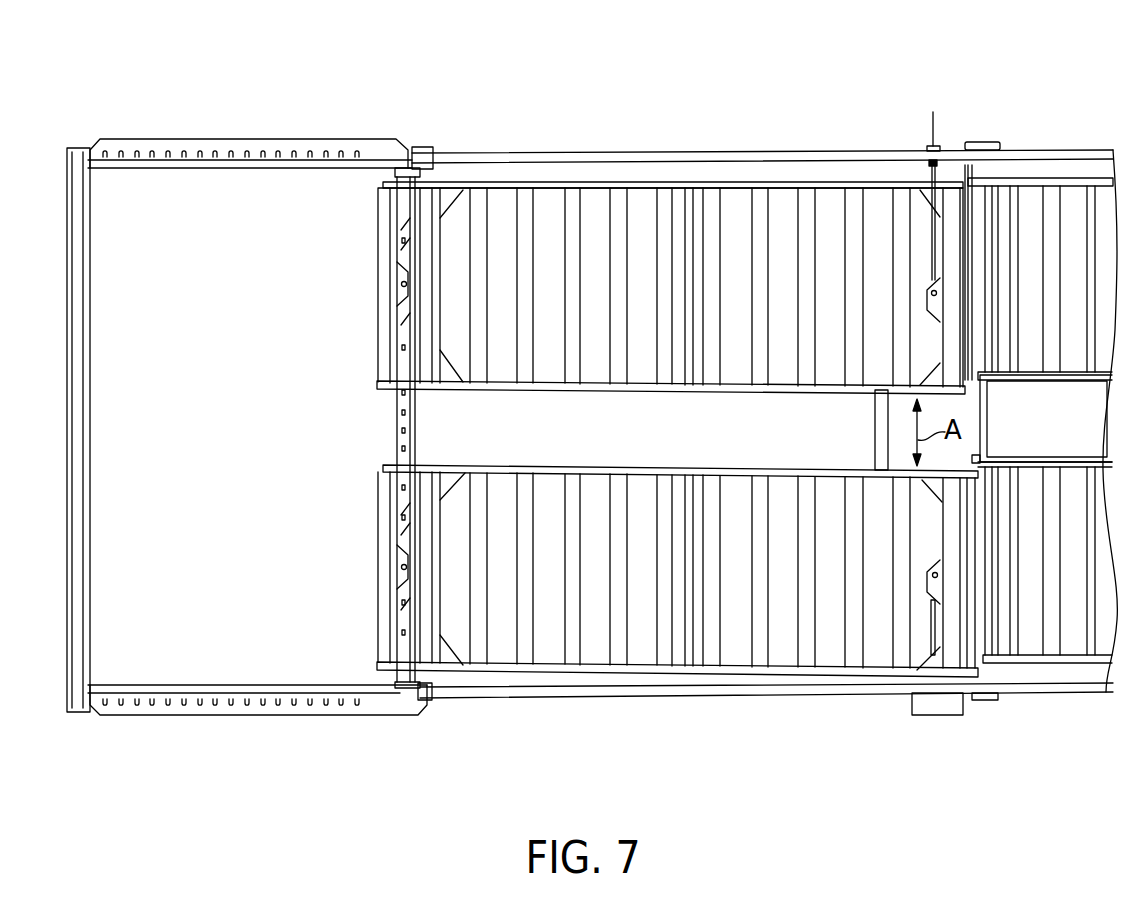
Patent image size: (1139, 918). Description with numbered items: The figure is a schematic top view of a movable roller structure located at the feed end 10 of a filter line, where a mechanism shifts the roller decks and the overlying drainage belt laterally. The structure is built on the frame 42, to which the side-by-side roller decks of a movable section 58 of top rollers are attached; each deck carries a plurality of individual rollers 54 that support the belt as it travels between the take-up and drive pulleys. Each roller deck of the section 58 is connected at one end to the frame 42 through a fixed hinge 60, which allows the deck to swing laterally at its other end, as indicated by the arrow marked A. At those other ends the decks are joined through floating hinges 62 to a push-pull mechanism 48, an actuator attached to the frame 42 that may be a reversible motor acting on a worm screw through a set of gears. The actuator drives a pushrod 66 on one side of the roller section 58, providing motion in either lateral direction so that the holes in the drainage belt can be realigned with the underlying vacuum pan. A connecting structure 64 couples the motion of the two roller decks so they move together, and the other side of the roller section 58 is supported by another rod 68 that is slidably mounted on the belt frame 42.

The feed end 10 is at (356, 126).
The frame 42 is at (498, 161).
The push-pull mechanism 48 is at (937, 718).
The individual rollers 54 is at (1033, 192).
The section of top rollers 58 is at (588, 192).
The fixed hinge 60 is at (403, 283).
The floating hinges 62 is at (933, 291).
The connecting structure 64 is at (875, 440).
The pushrod 66 is at (930, 630).
The rod 68 is at (930, 130).